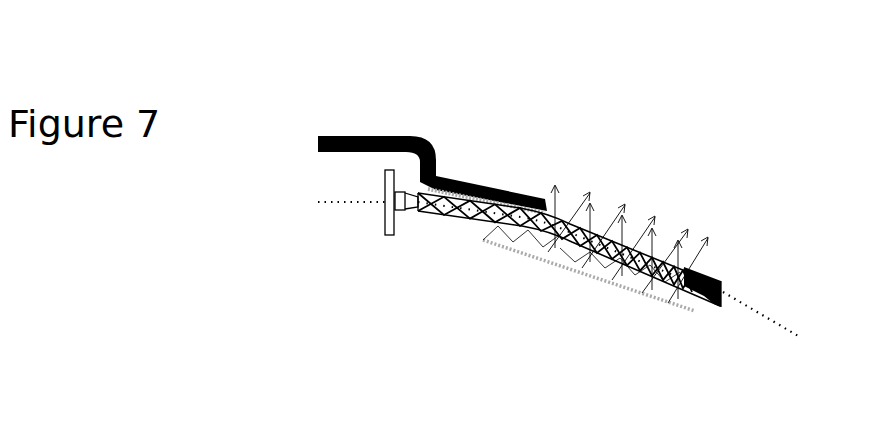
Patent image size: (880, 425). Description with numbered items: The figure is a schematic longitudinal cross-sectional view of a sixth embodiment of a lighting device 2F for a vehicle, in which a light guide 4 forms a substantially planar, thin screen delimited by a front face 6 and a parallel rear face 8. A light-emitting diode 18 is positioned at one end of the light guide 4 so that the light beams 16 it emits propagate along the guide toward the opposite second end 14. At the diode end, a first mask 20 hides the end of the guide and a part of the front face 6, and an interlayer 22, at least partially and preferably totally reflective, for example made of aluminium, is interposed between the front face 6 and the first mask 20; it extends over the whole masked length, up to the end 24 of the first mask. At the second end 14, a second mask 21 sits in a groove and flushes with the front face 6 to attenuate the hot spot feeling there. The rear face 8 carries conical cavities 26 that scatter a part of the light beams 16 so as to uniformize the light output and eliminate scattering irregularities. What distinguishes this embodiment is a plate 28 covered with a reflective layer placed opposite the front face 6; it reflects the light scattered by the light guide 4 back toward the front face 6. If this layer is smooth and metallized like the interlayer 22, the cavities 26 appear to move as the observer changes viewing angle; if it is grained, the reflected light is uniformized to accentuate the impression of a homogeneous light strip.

The lighting device 2F is at (316, 80).
The first mask 20 is at (313, 145).
The interlayer 22 is at (445, 180).
The end of the first mask 24 is at (546, 204).
The light-emitting diode 18 is at (398, 205).
The light guide 4 is at (560, 255).
The front face 6 is at (672, 268).
The second mask 21 is at (708, 274).
The second end 14 is at (726, 305).
The rear face 8 is at (634, 288).
The plate 28 is at (487, 243).
The conical cavities 26 is at (500, 228).
The light beams 16 is at (612, 240).